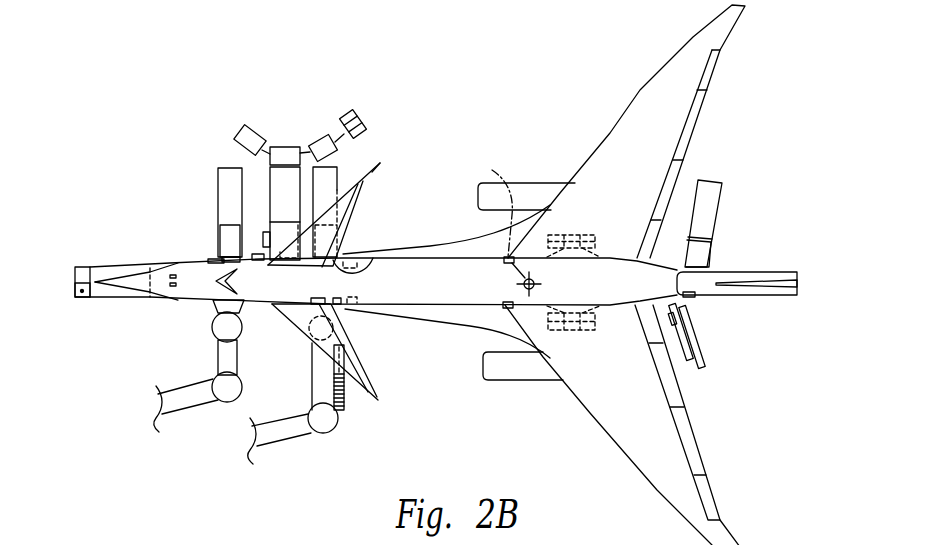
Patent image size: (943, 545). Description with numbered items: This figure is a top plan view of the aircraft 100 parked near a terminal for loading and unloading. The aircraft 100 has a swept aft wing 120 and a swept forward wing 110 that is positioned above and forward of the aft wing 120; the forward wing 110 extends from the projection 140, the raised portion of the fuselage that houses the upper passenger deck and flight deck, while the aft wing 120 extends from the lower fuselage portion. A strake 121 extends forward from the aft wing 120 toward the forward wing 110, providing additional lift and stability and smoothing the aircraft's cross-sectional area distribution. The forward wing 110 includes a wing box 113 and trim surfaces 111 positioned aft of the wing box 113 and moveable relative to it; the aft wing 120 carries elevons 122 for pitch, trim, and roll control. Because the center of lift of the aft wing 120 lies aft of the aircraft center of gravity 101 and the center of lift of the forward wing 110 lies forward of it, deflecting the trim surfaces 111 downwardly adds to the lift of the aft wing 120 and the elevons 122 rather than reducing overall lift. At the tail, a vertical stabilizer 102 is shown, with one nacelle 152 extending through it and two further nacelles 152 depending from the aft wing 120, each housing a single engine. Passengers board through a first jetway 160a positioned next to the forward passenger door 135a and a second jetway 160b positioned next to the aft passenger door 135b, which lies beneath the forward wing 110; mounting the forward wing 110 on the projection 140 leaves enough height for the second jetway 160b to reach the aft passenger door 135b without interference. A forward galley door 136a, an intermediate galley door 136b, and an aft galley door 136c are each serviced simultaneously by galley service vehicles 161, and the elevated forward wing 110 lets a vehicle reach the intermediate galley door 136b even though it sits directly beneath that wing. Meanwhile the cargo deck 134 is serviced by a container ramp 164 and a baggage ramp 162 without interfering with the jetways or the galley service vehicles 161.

The aircraft 100 is at (400, 80).
The center of gravity 101 is at (503, 229).
The vertical stabilizer 102 is at (750, 282).
The forward wing 110 is at (376, 168).
The trim surfaces 111 is at (364, 182).
The wing box 113 is at (382, 166).
The aft wing 120 is at (640, 93).
The strake 121 is at (436, 248).
The elevons 122 is at (703, 463).
The cargo deck 134 is at (258, 254).
The forward passenger door 135a is at (222, 298).
The aft passenger door 135b is at (338, 307).
The forward galley door 136a is at (213, 262).
The intermediate galley door 136b is at (350, 260).
The aft galley door 136c is at (698, 273).
The projection 140 is at (183, 268).
The nacelle 152 is at (530, 183).
The first jetway 160a is at (178, 373).
The second jetway 160b is at (331, 450).
The galley service vehicles 161 is at (218, 168).
The baggage ramp 162 is at (703, 366).
The container ramp 164 is at (262, 173).